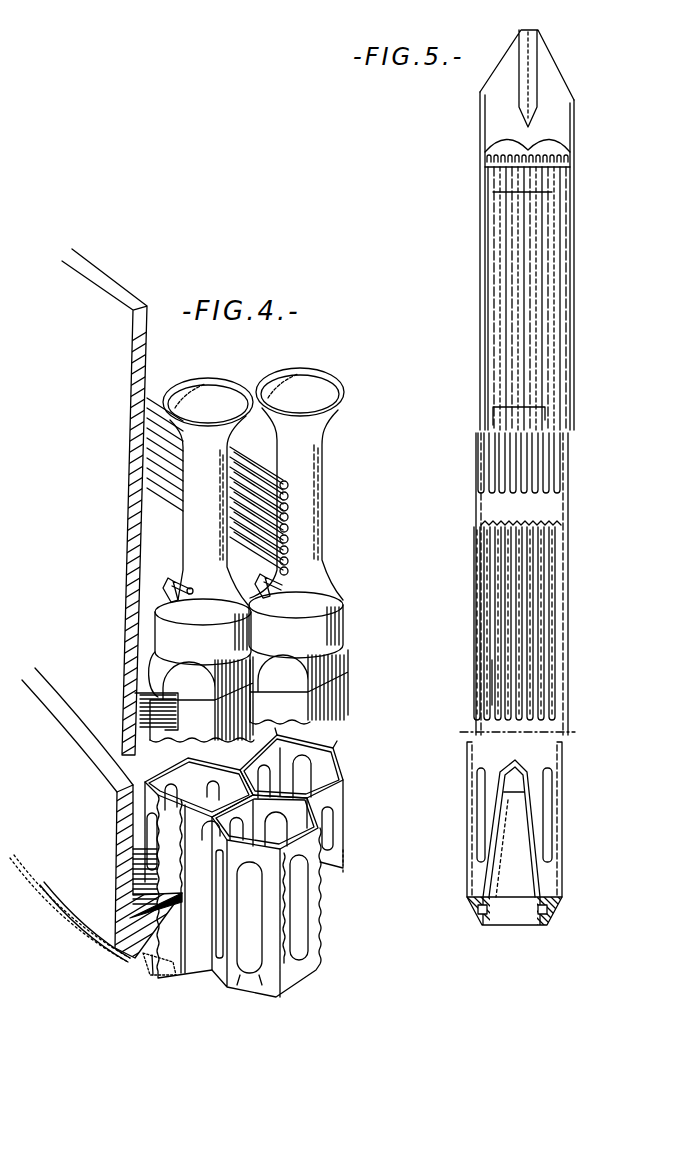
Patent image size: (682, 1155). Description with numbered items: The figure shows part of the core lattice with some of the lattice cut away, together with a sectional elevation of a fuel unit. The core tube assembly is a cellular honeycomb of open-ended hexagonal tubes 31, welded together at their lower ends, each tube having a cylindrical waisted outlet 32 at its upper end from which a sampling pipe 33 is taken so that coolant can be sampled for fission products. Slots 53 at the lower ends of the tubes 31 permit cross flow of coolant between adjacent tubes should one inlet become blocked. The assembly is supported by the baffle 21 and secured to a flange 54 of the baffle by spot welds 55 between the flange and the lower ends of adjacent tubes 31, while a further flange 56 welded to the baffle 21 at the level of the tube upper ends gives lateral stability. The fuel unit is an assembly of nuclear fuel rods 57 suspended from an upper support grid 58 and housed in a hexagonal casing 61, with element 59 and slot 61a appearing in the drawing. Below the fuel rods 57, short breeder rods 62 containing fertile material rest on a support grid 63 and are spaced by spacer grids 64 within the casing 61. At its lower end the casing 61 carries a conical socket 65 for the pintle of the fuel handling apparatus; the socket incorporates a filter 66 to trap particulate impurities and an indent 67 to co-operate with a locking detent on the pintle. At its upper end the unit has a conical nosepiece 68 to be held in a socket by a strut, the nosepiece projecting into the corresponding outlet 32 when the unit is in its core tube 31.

In FIG. 4, the baffle 21 is at (126, 862).
In FIG. 4, the hexagonal tube 31 is at (312, 897).
In FIG. 4, the waisted outlet 32 is at (318, 470).
In FIG. 4, the sampling pipe 33 is at (288, 583).
In FIG. 4, the slot 53 is at (300, 926).
In FIG. 4, the flange 54 is at (165, 951).
In FIG. 4, the spot weld 55 is at (178, 968).
In FIG. 4, the flange 56 is at (140, 716).
In FIG. 5, the fuel rod 57 is at (497, 246).
In FIG. 5, the upper support grid 58 is at (496, 165).
In FIG. 5, the inner support 59 is at (505, 405).
In FIG. 5, the hexagonal casing 61 is at (478, 416).
In FIG. 5, the slot 61a is at (480, 852).
In FIG. 5, the breeder rod 62 is at (492, 667).
In FIG. 5, the support grid 63 is at (490, 530).
In FIG. 5, the spacer grid 64 is at (500, 630).
In FIG. 5, the conical socket 65 is at (497, 810).
In FIG. 5, the filter 66 is at (498, 842).
In FIG. 5, the indent 67 is at (476, 907).
In FIG. 5, the conical nosepiece 68 is at (568, 84).